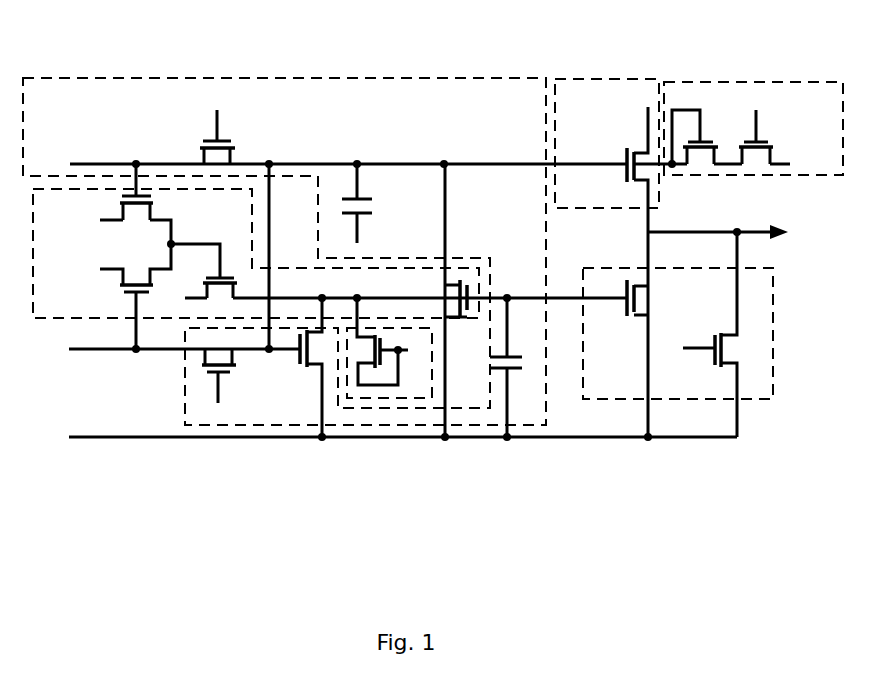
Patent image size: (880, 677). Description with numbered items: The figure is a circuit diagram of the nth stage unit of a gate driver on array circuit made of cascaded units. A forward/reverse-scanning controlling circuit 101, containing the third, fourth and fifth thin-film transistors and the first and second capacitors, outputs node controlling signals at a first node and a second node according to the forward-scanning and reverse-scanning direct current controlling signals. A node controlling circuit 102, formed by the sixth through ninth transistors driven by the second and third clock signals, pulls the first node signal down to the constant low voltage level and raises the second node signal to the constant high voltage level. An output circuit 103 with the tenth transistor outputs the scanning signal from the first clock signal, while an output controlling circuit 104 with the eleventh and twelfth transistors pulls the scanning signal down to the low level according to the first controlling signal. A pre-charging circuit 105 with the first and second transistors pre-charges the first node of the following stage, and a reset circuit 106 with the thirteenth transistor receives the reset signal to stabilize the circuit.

The forward/reverse-scanning controlling circuit 101 is at (297, 78).
The node controlling circuit 102 is at (93, 319).
The output circuit 103 is at (598, 78).
The output controlling circuit 104 is at (773, 365).
The pre-charging circuit 105 is at (725, 82).
The reset circuit 106 is at (378, 400).